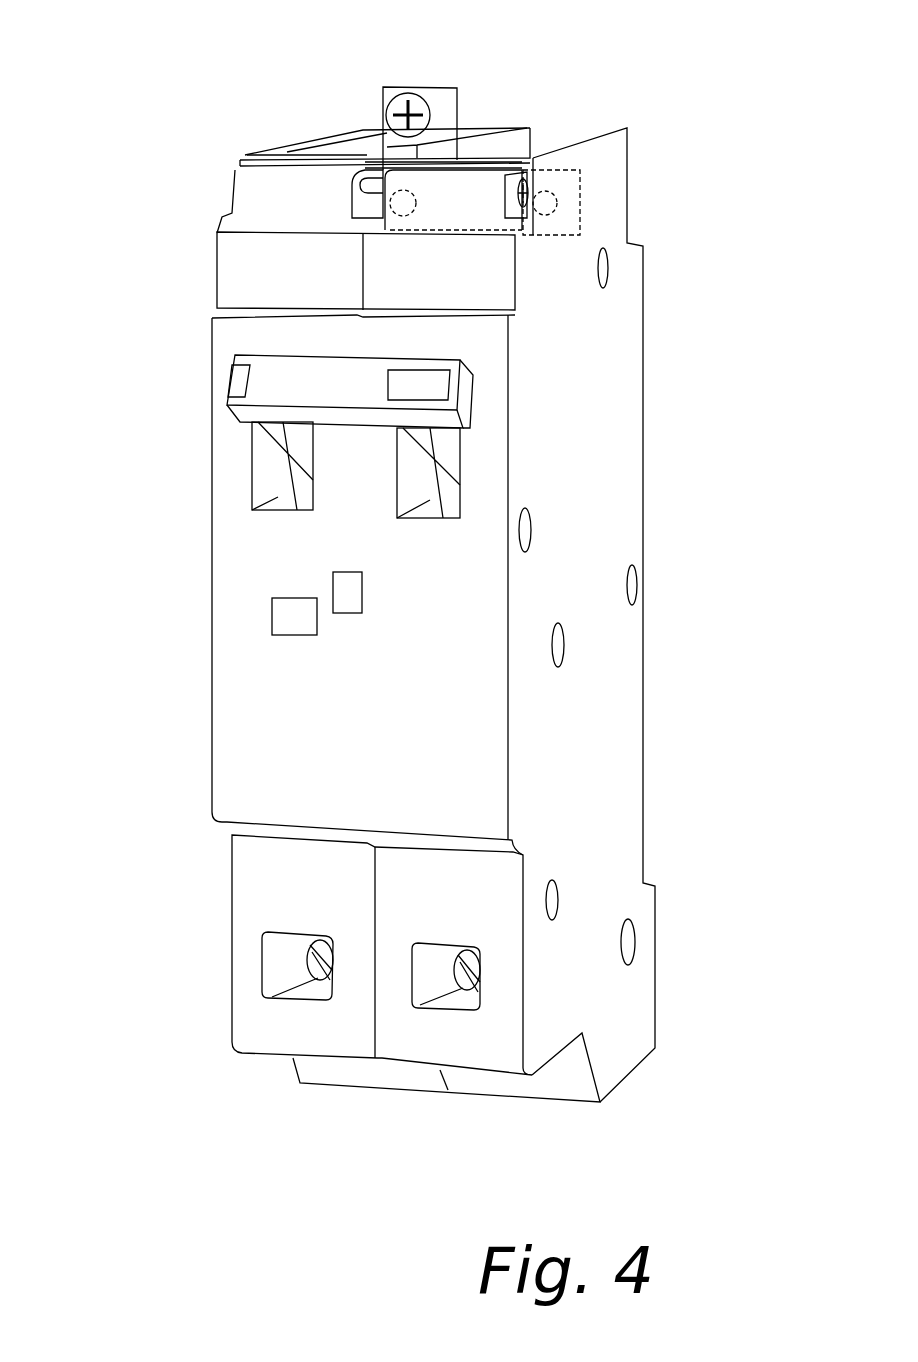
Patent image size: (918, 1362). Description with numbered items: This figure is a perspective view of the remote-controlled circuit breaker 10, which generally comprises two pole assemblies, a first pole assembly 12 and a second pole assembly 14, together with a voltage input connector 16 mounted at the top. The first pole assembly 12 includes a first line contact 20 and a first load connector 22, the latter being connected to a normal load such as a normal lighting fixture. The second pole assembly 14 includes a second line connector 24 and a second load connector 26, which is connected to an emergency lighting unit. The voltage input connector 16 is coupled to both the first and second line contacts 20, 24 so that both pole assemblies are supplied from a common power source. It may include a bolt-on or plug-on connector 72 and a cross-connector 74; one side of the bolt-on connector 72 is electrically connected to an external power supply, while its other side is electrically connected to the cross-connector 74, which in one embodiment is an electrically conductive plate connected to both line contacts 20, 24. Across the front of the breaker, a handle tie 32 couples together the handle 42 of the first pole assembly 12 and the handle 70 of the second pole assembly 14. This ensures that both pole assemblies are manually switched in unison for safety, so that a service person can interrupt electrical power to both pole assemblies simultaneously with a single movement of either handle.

The remote-controlled circuit breaker 10 is at (120, 53).
The first pole assembly 12 is at (242, 863).
The second pole assembly 14 is at (605, 677).
The voltage input connector 16 is at (370, 98).
The first line contact 20 is at (390, 202).
The first load connector 22 is at (272, 978).
The second line connector 24 is at (555, 207).
The second load connector 26 is at (463, 1005).
The handle tie 32 is at (270, 368).
The handle 42 is at (273, 438).
The handle 70 is at (448, 455).
The bolt-on or plug-on connector 72 is at (447, 98).
The cross-connector 74 is at (487, 203).